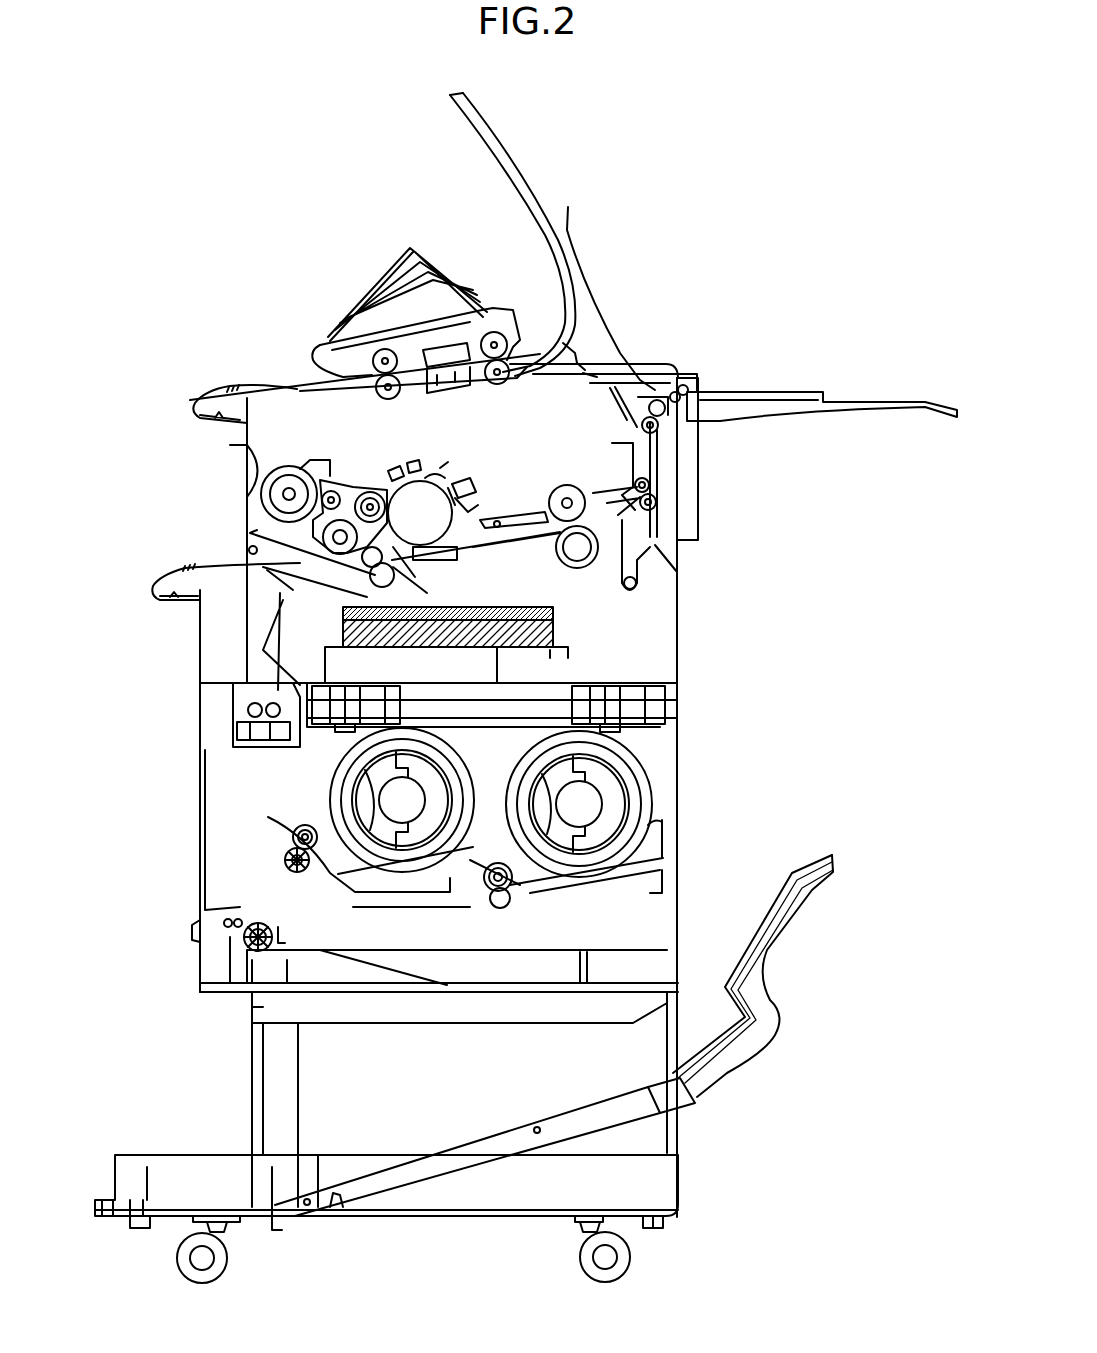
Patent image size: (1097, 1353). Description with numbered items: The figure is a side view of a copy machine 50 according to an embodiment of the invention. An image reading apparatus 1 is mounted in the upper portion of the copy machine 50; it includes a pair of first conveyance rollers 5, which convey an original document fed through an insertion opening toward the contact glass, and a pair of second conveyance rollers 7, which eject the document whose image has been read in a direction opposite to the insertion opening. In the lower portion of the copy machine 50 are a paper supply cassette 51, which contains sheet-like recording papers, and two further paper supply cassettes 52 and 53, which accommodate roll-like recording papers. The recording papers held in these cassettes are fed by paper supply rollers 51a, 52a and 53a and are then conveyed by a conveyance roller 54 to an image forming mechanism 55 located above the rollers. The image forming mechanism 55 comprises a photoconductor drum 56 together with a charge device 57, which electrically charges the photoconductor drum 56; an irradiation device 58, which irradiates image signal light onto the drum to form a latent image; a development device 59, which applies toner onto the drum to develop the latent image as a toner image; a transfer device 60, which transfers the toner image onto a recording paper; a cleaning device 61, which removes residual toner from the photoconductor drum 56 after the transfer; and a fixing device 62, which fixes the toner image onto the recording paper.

The image reading apparatus 1 is at (490, 294).
The pair of first conveyance rollers 5 is at (314, 352).
The pair of second conveyance rollers 7 is at (499, 344).
The copy machine 50 is at (740, 522).
The paper supply cassette 51 is at (600, 945).
The paper supply roller 51a is at (250, 926).
The paper supply cassette 52 is at (342, 772).
The paper supply roller 52a is at (295, 832).
The paper supply cassette 53 is at (648, 765).
The paper supply roller 53a is at (508, 892).
The conveyance roller 54 is at (220, 716).
The image forming mechanism 55 is at (514, 561).
The photoconductor drum 56 is at (433, 530).
The charge device 57 is at (432, 472).
The irradiation device 58 is at (387, 470).
The development device 59 is at (320, 466).
The transfer device 60 is at (450, 632).
The cleaning device 61 is at (466, 482).
The fixing device 62 is at (558, 476).